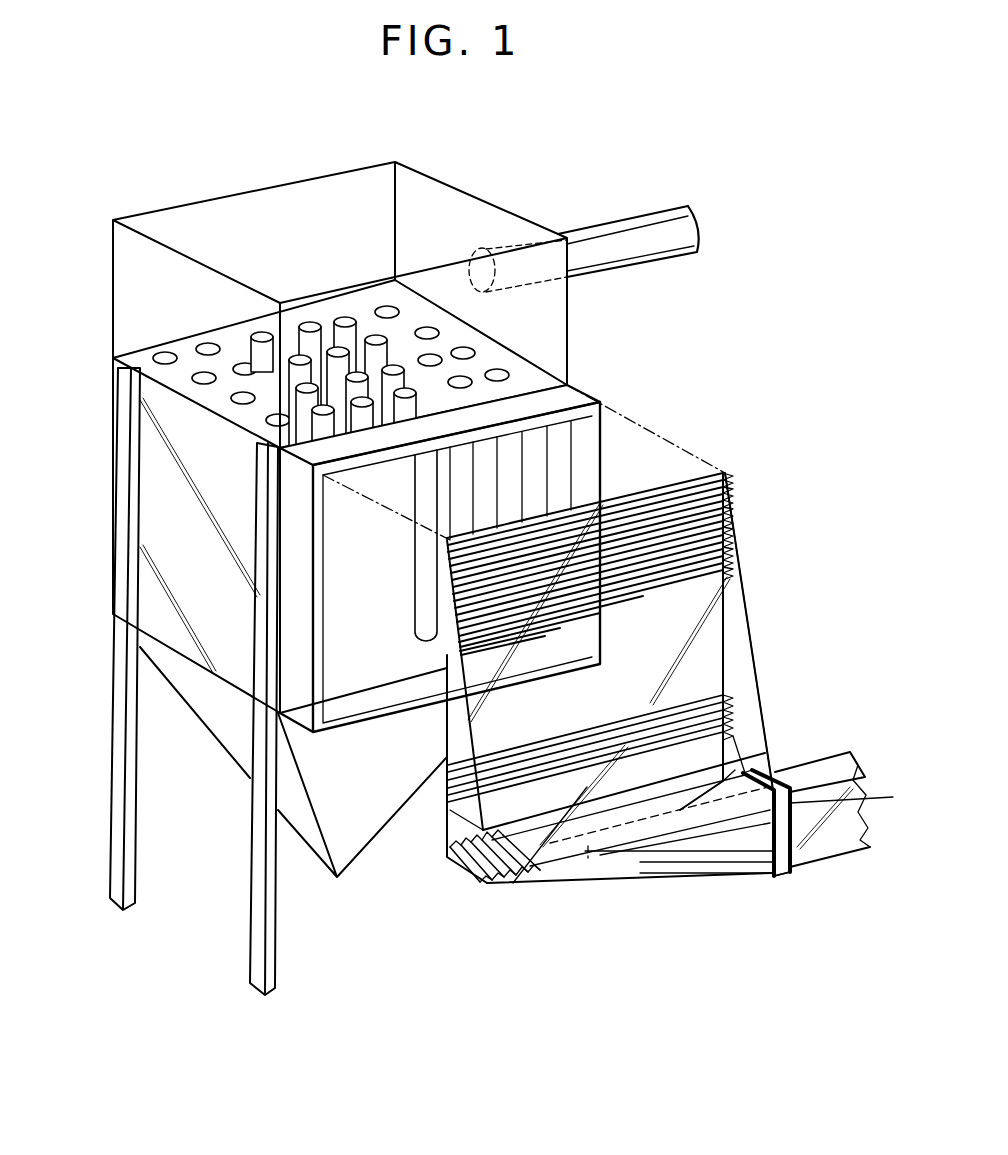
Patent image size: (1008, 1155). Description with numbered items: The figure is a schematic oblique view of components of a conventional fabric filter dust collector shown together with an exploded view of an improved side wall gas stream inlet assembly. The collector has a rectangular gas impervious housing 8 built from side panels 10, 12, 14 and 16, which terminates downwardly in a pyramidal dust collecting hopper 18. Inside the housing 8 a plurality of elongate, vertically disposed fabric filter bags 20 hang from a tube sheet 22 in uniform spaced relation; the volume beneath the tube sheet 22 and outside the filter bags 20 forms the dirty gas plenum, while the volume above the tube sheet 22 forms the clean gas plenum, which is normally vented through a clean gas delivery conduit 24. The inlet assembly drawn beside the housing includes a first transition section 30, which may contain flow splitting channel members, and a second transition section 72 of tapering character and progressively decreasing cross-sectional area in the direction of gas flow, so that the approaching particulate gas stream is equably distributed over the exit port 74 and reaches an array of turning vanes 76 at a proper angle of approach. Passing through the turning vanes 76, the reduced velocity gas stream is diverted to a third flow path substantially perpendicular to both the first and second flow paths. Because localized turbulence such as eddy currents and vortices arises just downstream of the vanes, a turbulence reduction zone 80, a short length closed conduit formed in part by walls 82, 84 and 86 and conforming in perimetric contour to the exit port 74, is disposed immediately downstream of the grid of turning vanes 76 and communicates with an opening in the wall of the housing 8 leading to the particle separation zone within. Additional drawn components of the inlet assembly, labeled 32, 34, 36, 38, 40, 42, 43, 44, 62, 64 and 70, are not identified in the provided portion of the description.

The housing 8 is at (100, 428).
The side panel 10 is at (283, 403).
The side panel 12 is at (420, 305).
The side panel 14 is at (290, 472).
The side panel 16 is at (160, 428).
The pyramidal dust collecting hopper 18 is at (345, 880).
The fabric filter bags 20 is at (158, 356).
The tube sheet 22 is at (410, 357).
The clean gas delivery conduit 24 is at (600, 234).
The first transition section 30 is at (755, 880).
The end plate 32 is at (760, 838).
The discharge duct 34 is at (847, 855).
The trough bottom 36 is at (520, 872).
The support bar 38 is at (640, 878).
The rod 40 is at (598, 925).
The bristle bundle 42 is at (455, 870).
The hidden member 43 is at (585, 870).
The base plate 44 is at (675, 878).
The lower louvers 62 is at (743, 734).
The louver end 64 is at (765, 765).
The trough 70 is at (557, 788).
The second transition section 72 is at (770, 665).
The exit port 74 is at (725, 632).
The array of turning vanes 76 is at (693, 492).
The turbulence reduction zone 80 is at (583, 383).
The wall 82 is at (290, 533).
The wall 84 is at (540, 410).
The wall 86 is at (735, 521).